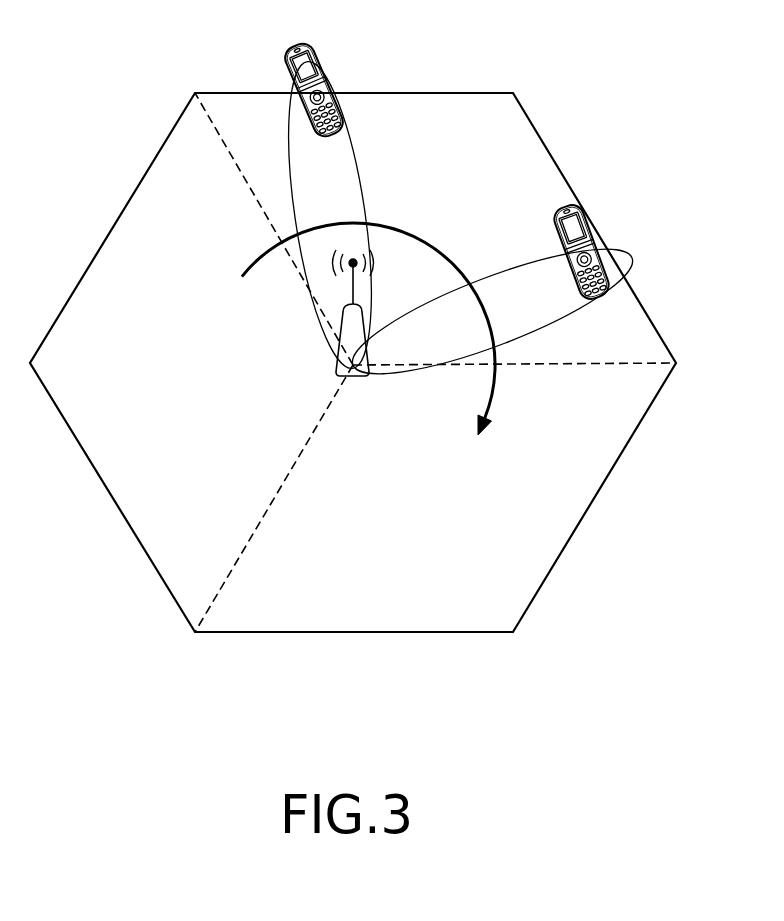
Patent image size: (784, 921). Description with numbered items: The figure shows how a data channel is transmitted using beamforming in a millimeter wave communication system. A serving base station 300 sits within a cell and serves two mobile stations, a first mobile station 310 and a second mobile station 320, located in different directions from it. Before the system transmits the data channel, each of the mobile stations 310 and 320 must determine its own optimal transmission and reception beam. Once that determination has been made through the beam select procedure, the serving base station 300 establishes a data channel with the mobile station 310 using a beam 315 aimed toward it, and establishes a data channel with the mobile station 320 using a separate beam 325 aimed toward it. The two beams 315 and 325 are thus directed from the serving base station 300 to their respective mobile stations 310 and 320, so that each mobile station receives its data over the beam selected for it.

The serving base station 300 is at (355, 378).
The mobile station 310 is at (300, 45).
The beam 315 is at (357, 173).
The mobile station 320 is at (571, 207).
The beam 325 is at (632, 259).